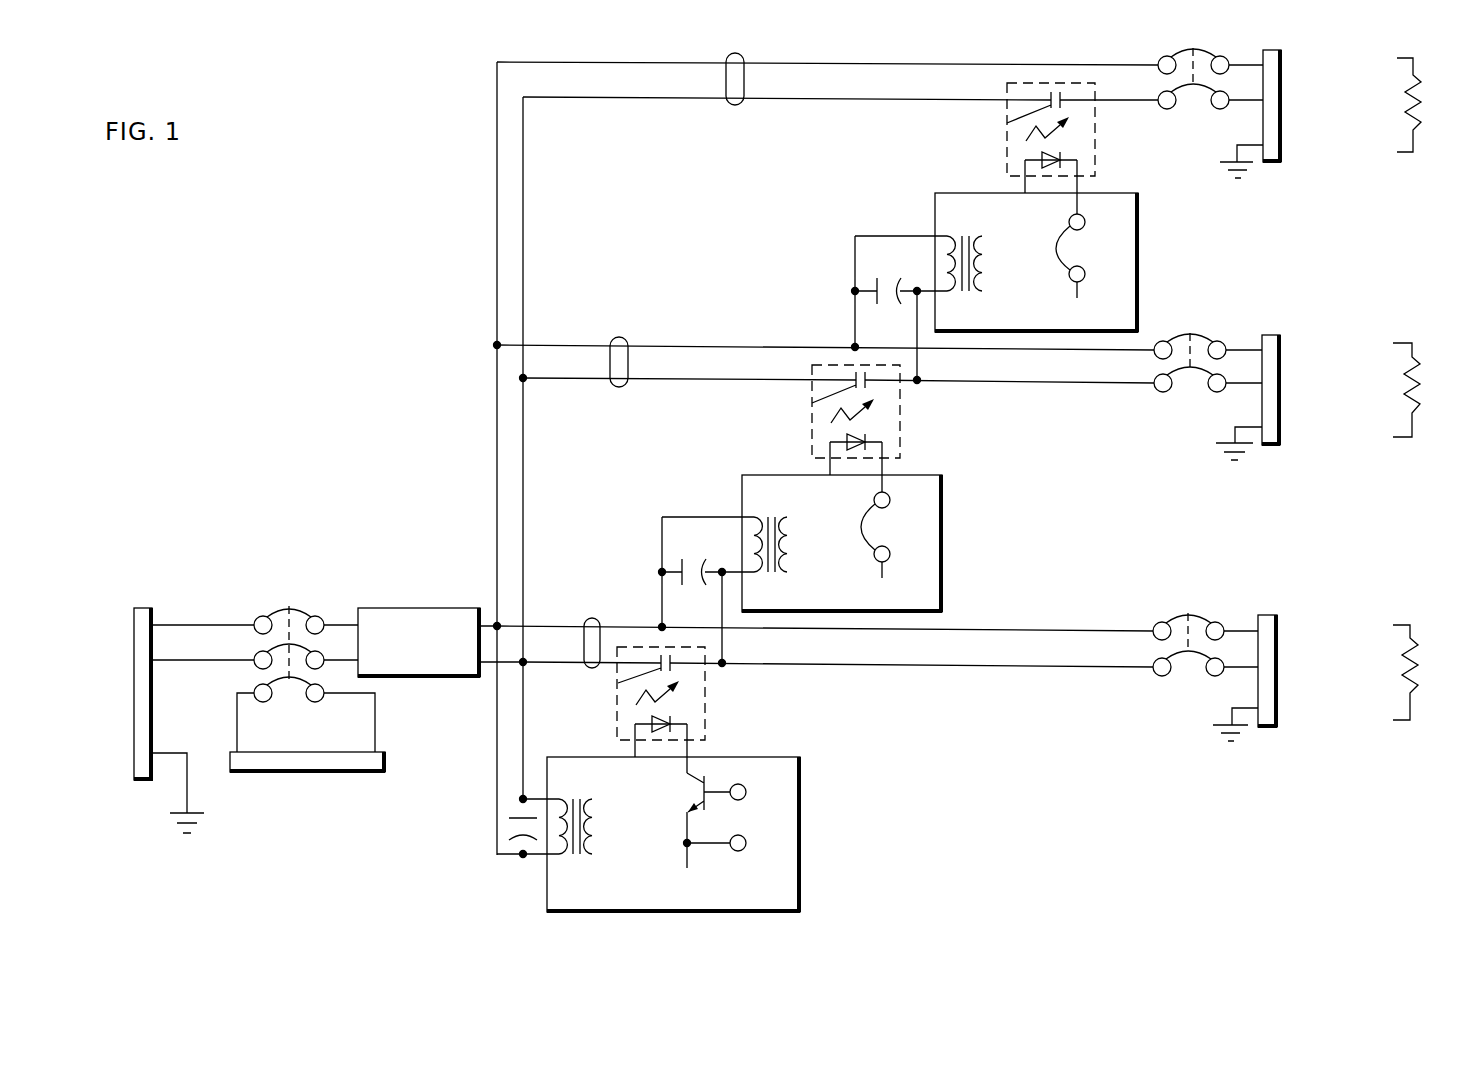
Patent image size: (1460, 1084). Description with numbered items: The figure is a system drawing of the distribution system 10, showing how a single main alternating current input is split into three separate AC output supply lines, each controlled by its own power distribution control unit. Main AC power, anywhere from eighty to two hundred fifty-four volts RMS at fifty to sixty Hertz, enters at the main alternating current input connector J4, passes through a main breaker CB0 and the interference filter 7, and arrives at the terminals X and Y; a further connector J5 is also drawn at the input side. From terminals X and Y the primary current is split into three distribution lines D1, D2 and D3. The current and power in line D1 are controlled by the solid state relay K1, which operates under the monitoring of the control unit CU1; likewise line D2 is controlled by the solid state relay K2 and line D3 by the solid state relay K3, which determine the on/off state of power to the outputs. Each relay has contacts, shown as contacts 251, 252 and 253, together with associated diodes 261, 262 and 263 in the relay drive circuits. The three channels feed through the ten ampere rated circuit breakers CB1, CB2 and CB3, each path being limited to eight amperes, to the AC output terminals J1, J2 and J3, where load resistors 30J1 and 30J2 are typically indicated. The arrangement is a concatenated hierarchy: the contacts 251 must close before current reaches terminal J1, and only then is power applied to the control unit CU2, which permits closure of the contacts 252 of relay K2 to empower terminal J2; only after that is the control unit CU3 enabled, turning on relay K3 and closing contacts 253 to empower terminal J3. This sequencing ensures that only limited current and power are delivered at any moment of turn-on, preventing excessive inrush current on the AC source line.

The distribution system 10 is at (422, 346).
The interference filter 7 is at (435, 677).
The contacts of solid state relay K1 251 is at (618, 683).
The contacts of solid state relay K2 252 is at (812, 403).
The contacts of solid state relay K3 253 is at (1007, 123).
The relay coil diode K1 261 is at (672, 718).
The relay coil diode K2 262 is at (867, 436).
The relay coil diode K3 263 is at (1062, 154).
The main alternating current input connector J4 is at (153, 704).
The main circuit breaker CB0 is at (306, 635).
The connector J5 is at (328, 735).
The terminal X is at (495, 623).
The terminal Y is at (525, 661).
The distribution line D1 is at (593, 617).
The distribution line D2 is at (620, 336).
The distribution line D3 is at (733, 107).
The solid state relay K1 is at (617, 713).
The solid state relay K2 is at (812, 433).
The solid state relay K3 is at (1007, 153).
The control unit CU1 is at (800, 788).
The control unit CU2 is at (942, 488).
The control unit CU3 is at (1138, 208).
The circuit breaker CB1 is at (1188, 629).
The circuit breaker CB2 is at (1190, 346).
The circuit breaker CB3 is at (1193, 64).
The AC output terminal J1 is at (1299, 662).
The AC output terminal J2 is at (1302, 380).
The AC output terminal J3 is at (1305, 99).
The load resistor 30J1 is at (1392, 91).
The load resistor 30J2 is at (1389, 655).